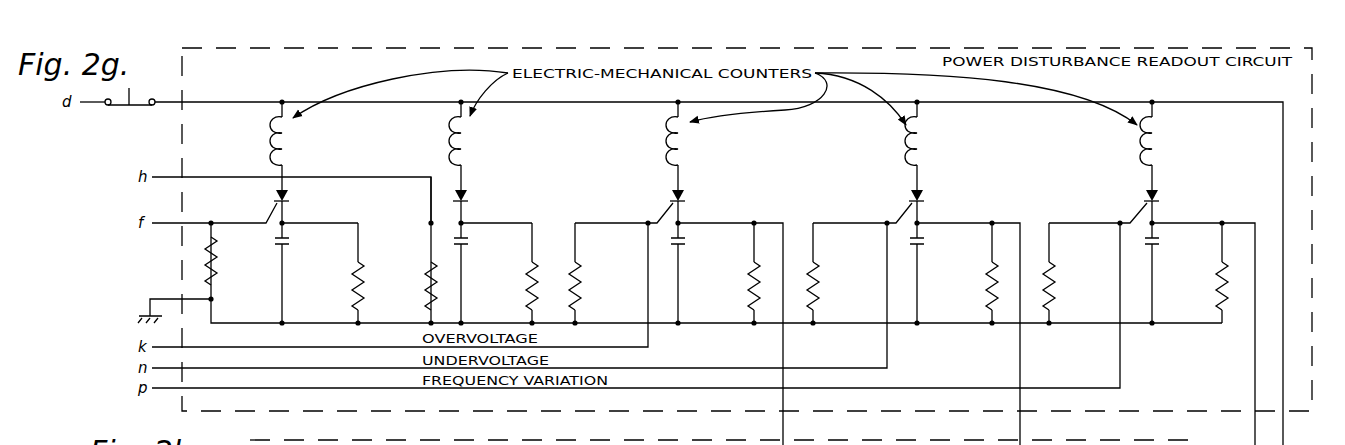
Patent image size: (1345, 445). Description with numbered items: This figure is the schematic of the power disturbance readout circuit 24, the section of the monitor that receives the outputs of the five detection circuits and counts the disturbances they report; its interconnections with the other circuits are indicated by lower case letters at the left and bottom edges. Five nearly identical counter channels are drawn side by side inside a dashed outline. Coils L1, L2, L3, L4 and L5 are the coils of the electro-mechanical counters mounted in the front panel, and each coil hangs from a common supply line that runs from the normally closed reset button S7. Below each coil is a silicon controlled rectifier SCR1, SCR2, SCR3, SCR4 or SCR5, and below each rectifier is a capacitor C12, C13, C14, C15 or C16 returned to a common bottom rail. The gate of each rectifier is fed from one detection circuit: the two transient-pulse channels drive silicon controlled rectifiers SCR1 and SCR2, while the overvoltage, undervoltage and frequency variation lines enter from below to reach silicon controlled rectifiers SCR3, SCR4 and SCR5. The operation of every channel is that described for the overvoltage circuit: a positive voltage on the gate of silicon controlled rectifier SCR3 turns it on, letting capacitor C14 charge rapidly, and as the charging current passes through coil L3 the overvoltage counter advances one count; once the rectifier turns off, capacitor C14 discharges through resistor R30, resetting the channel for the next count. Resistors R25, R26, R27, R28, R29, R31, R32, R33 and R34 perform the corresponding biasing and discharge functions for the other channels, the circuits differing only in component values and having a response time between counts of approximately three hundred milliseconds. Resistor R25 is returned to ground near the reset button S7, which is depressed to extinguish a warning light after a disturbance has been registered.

The power disturbance readout circuit 24 is at (181, 252).
The reset button S7 is at (117, 112).
The coil of electro-mechanical counter L1 is at (288, 144).
The coil of electro-mechanical counter L2 is at (467, 144).
The coil of overvoltage electro-mechanical counter L3 is at (684, 144).
The coil of electro-mechanical counter L4 is at (923, 144).
The coil of electro-mechanical counter L5 is at (1158, 144).
The silicon controlled rectifier SCR1 is at (299, 208).
The silicon controlled rectifier SCR2 is at (478, 208).
The silicon controlled rectifier SCR3 is at (695, 208).
The silicon controlled rectifier SCR4 is at (934, 208).
The silicon controlled rectifier SCR5 is at (1169, 208).
The capacitor C12 is at (295, 274).
The capacitor C13 is at (474, 274).
The capacitor C14 is at (691, 274).
The capacitor C15 is at (930, 274).
The capacitor C16 is at (1165, 274).
The resistor R25 is at (227, 261).
The resistor R26 is at (343, 274).
The resistor R27 is at (416, 294).
The resistor R28 is at (517, 274).
The resistor R29 is at (591, 274).
The resistor R30 is at (738, 274).
The resistor R31 is at (829, 274).
The resistor R32 is at (977, 274).
The resistor R33 is at (1065, 274).
The resistor R34 is at (1206, 273).